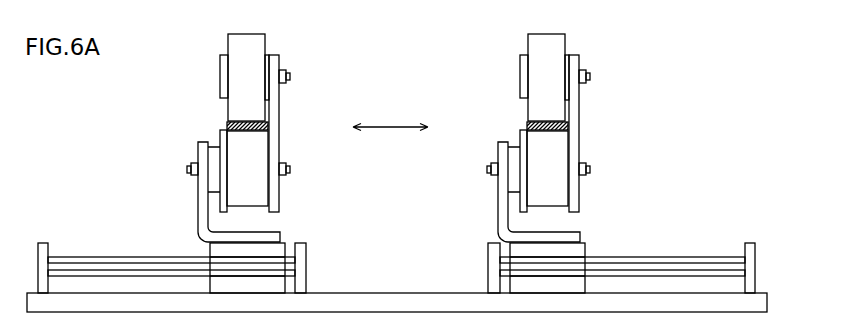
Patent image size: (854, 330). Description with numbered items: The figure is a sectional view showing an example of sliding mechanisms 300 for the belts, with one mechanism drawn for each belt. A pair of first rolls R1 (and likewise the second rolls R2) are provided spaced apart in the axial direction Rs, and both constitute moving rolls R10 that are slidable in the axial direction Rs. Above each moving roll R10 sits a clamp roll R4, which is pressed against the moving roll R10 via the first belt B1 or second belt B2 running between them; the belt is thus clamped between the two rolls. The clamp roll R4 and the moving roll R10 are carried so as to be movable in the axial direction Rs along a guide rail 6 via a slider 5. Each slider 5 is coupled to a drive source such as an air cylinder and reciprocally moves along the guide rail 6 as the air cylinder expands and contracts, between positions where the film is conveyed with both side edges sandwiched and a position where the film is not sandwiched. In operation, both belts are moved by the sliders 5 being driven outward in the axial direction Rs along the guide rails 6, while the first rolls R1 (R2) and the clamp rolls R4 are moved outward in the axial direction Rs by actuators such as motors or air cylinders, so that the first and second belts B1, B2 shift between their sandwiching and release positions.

The sliding mechanism 300 is at (197, 131).
The clamp roll R4 is at (256, 45).
The first belt B1 is at (359, 100).
The second belt B2 is at (246, 121).
The first roll R1 is at (257, 197).
The second roll R2 is at (464, 171).
The moving roll R10 is at (464, 171).
The axial direction Rs is at (390, 114).
The slider 5 is at (209, 252).
The guide rail 6 is at (80, 262).